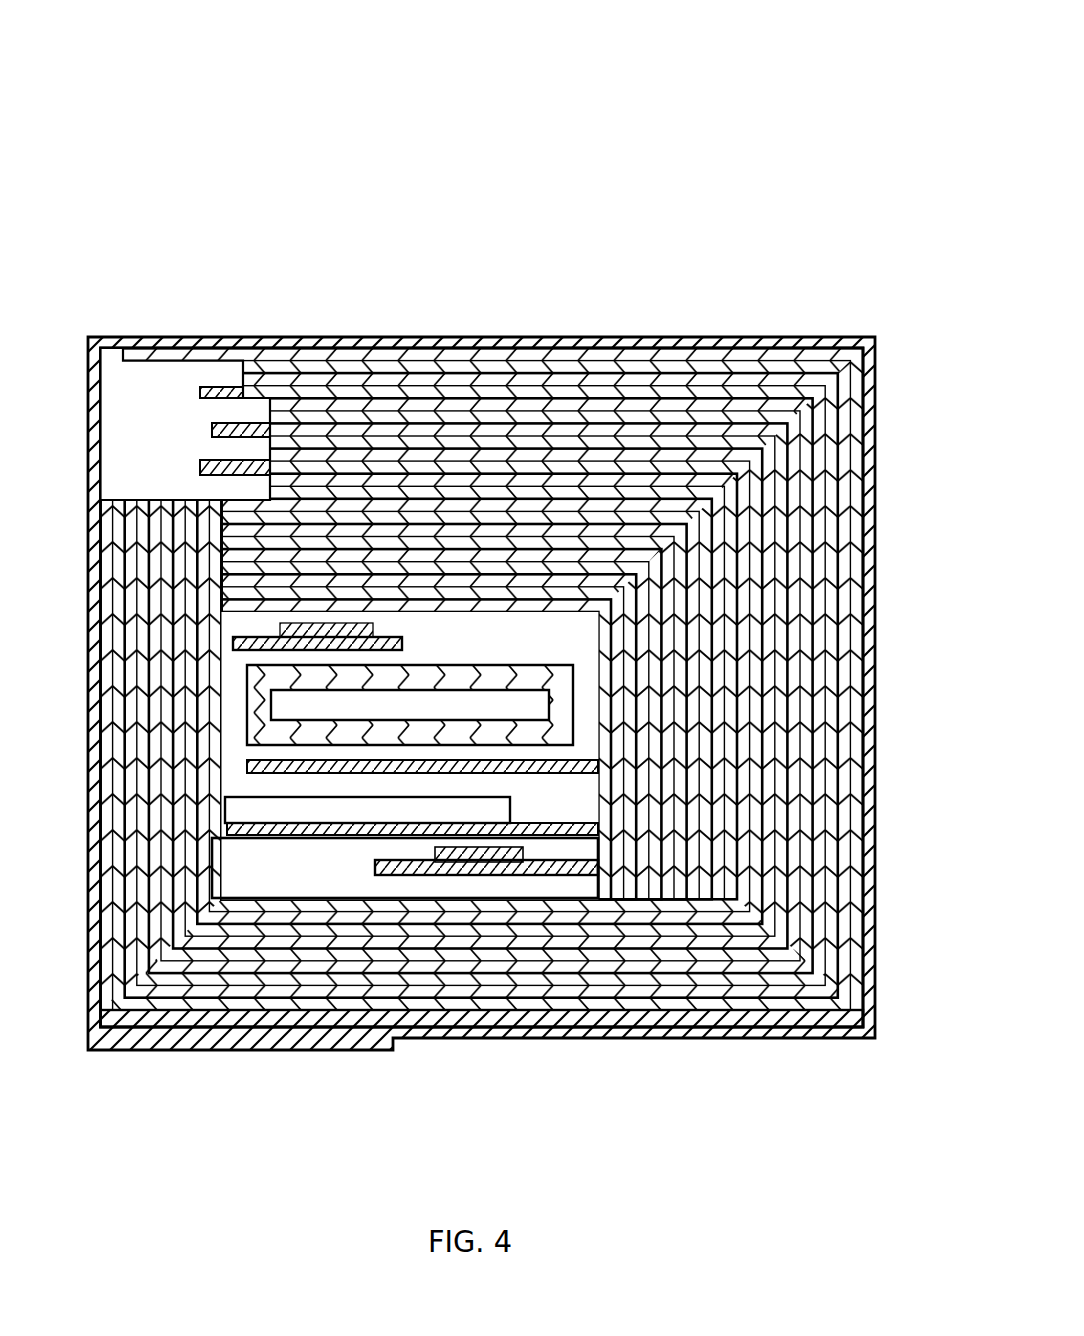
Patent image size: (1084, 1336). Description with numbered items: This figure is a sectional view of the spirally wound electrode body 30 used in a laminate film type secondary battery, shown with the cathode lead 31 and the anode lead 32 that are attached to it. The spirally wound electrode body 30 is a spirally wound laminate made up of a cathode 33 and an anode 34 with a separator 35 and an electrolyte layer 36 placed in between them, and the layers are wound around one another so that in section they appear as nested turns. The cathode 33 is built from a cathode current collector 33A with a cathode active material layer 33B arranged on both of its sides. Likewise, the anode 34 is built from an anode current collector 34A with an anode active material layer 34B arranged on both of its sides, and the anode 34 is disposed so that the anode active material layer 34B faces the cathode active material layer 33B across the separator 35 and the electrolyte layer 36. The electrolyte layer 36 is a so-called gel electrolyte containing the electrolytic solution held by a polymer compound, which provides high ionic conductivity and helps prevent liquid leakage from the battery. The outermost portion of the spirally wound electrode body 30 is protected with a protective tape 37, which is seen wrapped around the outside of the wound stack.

The spirally wound electrode body 30 is at (693, 100).
The cathode lead 31 is at (300, 628).
The anode lead 32 is at (468, 858).
The cathode 33 is at (207, 330).
The cathode current collector 33A is at (232, 428).
The cathode active material layer 33B is at (310, 440).
The anode 34 is at (482, 594).
The anode current collector 34A is at (422, 358).
The anode active material layer 34B is at (548, 492).
The separator 35 is at (665, 393).
The electrolyte layer 36 is at (711, 473).
The protective tape 37 is at (832, 345).